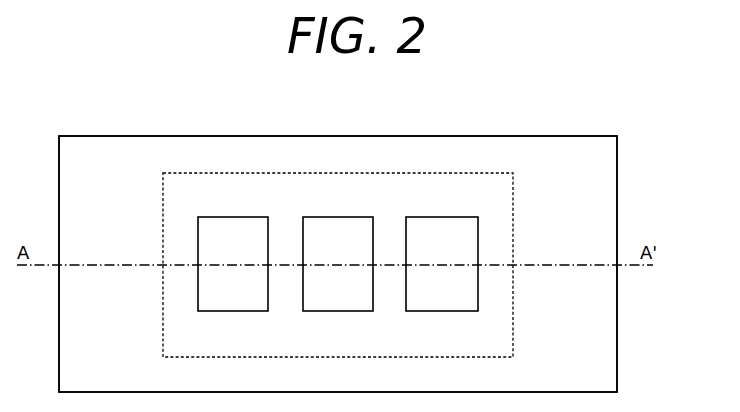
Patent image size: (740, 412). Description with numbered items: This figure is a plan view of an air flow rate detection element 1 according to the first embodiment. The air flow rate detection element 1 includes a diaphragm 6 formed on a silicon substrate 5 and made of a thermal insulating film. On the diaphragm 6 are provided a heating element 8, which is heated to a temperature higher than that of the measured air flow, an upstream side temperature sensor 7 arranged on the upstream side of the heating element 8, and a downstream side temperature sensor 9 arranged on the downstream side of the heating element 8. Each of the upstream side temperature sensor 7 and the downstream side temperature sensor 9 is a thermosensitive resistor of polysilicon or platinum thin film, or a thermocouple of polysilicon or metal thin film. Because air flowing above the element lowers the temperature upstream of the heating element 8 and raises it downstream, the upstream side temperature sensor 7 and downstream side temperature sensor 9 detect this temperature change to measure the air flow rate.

The air flow rate detection element 1 is at (566, 125).
The silicon substrate 5 is at (121, 136).
The diaphragm 6 is at (200, 173).
The upstream side temperature sensor 7 is at (235, 217).
The heating element 8 is at (338, 217).
The downstream side temperature sensor 9 is at (441, 217).